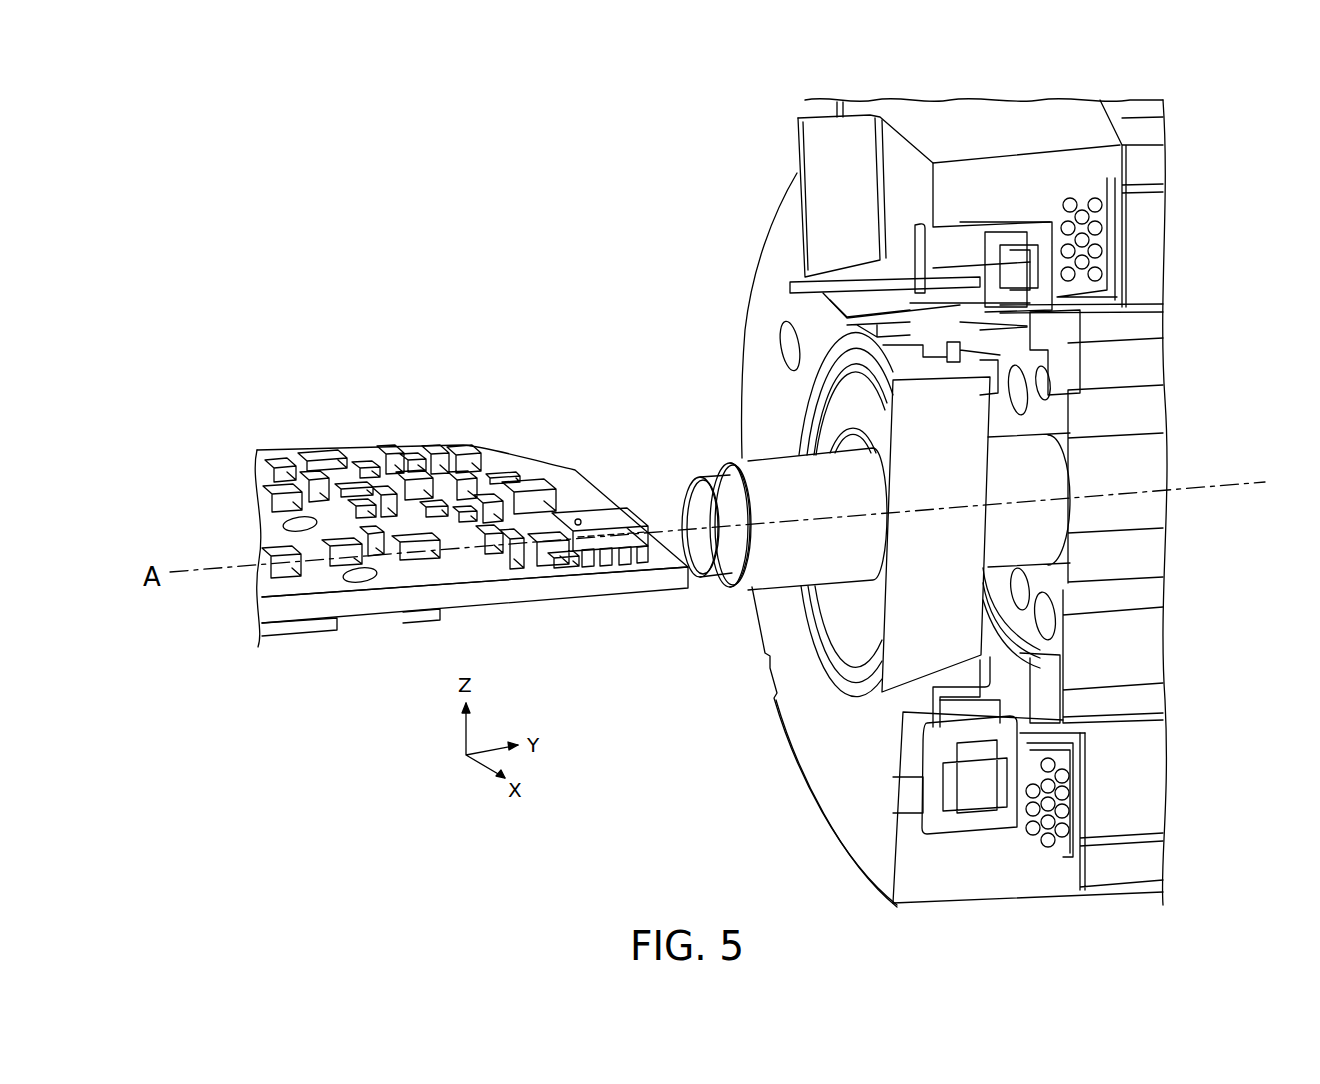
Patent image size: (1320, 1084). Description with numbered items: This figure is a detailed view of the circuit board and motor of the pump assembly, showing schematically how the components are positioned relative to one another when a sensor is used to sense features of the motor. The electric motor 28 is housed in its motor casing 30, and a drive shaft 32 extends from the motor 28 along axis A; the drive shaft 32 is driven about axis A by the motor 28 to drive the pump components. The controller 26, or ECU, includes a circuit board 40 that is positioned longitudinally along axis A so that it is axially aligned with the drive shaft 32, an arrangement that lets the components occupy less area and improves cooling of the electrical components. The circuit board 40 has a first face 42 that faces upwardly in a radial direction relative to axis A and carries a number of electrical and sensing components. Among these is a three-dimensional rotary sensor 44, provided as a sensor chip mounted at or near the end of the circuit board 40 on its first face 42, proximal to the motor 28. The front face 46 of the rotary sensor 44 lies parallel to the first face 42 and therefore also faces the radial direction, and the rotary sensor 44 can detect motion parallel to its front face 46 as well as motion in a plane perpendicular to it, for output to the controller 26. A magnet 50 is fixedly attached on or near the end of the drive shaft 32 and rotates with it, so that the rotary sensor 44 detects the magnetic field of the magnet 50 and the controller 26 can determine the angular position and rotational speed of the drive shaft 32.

The controller 26 is at (462, 393).
The electric motor 28 is at (978, 99).
The motor casing 30 is at (1082, 127).
The drive shaft 32 is at (787, 557).
The circuit board 40 is at (367, 604).
The first face 42 is at (345, 452).
The 3D rotary sensor 44 is at (577, 517).
The front face 46 is at (607, 508).
The magnet 50 is at (727, 555).